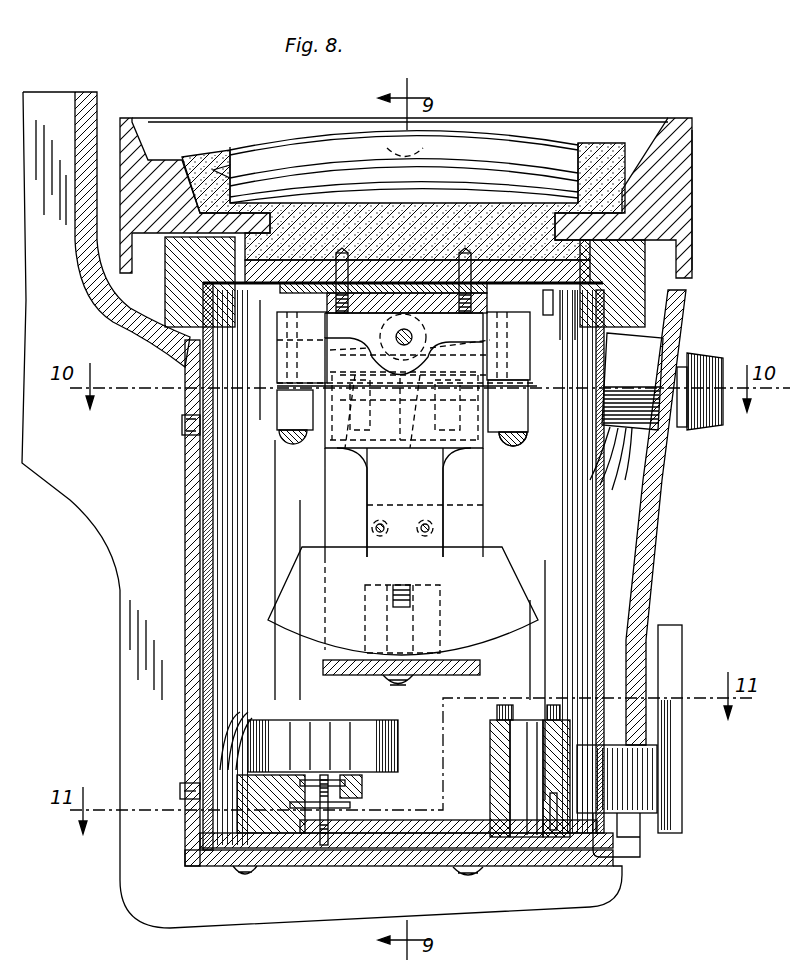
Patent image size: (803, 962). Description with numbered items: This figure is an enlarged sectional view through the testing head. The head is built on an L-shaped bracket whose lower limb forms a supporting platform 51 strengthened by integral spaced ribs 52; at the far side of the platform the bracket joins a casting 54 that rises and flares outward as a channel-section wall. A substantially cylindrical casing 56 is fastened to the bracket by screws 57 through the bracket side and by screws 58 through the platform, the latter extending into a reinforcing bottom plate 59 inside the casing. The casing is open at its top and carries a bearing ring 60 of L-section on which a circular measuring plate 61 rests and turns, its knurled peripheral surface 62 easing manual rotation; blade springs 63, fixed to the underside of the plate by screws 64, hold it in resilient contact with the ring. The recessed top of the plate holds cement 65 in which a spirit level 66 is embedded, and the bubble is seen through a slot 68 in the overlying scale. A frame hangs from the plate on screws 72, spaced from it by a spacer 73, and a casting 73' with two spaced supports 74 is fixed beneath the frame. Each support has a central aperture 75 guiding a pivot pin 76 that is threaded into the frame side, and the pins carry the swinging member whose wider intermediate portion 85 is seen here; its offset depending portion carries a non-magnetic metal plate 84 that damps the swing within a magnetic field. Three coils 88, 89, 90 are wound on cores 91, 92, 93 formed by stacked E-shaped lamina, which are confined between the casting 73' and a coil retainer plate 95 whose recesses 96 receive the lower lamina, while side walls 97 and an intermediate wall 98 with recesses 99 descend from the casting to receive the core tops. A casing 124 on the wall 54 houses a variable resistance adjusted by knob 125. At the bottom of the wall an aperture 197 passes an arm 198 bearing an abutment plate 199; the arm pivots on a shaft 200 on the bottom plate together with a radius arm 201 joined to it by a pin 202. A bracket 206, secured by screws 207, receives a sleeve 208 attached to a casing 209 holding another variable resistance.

The supporting platform 51 is at (350, 867).
The spaced ribs 52 is at (455, 912).
The casting 54 is at (660, 540).
The cylindrical casing 56 is at (210, 542).
The screws 57 is at (195, 790).
The screws 58 is at (470, 872).
The reinforcing bottom plate 59 is at (392, 850).
The bearing ring 60 is at (640, 268).
The circular measuring plate 61 is at (670, 195).
The knurled peripheral surface 62 is at (694, 210).
The blade springs 63 is at (547, 313).
The screws 64 is at (572, 317).
The cement 65 is at (612, 150).
The spirit level 66 is at (495, 160).
The slot 68 is at (470, 130).
The screws 72 is at (475, 262).
The spacer 73 is at (406, 297).
The casting 73' is at (221, 285).
The spaced supports 74 is at (337, 328).
The central aperture 75 is at (413, 340).
The pivot pin 76 is at (396, 337).
The non-magnetic metal plate 84 is at (505, 585).
The intermediate portion 85 is at (480, 458).
The coil of wire 88 is at (404, 447).
The coil of wire 89 is at (405, 414).
The coil of wire 90 is at (463, 502).
The core 91 is at (302, 347).
The core 92 is at (405, 428).
The core 93 is at (528, 405).
The coil retainer plate 95 is at (522, 446).
The recesses 96 is at (403, 425).
The side walls 97 is at (525, 384).
The intermediate wall 98 is at (277, 406).
The recesses 99 is at (545, 360).
The casing 124 is at (652, 440).
The knob 125 is at (700, 355).
The aperture 197 is at (640, 845).
The arm 198 is at (585, 748).
The abutment plate 199 is at (682, 762).
The shaft 200 is at (500, 760).
The radius arm 201 is at (460, 820).
The pin 202 is at (555, 833).
The bracket 206 is at (233, 798).
The screws 207 is at (278, 866).
The sleeve 208 is at (363, 787).
The casing 209 is at (300, 725).